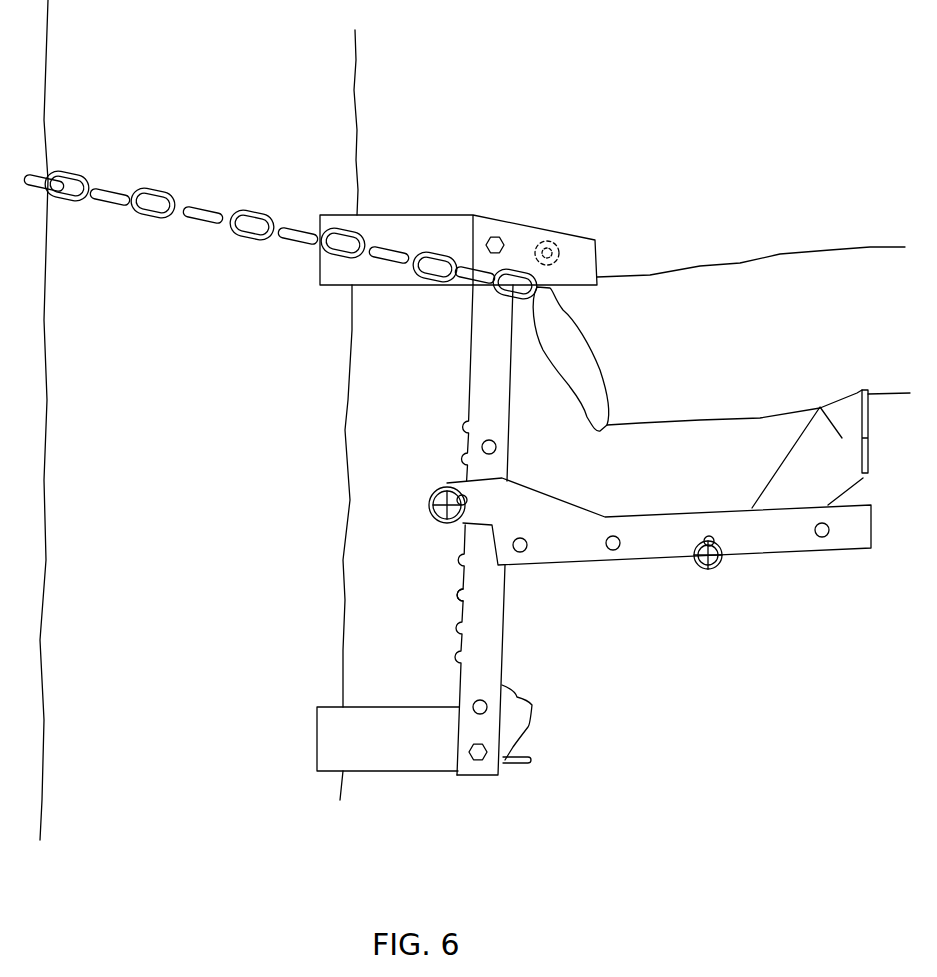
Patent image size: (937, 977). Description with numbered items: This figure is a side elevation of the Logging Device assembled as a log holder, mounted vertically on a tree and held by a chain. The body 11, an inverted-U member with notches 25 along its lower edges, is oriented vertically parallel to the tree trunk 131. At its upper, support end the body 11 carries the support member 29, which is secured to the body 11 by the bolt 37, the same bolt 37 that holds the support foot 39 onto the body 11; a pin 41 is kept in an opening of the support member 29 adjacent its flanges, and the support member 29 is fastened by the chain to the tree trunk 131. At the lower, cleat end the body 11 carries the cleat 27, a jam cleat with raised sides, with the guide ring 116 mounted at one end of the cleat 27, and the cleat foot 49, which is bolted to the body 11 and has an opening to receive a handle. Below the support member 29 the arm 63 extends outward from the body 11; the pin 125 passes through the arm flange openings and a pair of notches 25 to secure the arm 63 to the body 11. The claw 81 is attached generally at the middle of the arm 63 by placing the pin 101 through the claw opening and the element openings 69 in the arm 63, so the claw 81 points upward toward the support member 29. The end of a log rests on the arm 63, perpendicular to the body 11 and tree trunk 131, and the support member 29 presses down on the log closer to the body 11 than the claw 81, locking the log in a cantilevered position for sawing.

The tree trunk 131 is at (357, 58).
The support member 29 is at (597, 258).
The support foot 39 is at (400, 215).
The bolt 37 is at (495, 237).
The pin 41 is at (593, 240).
The body 11 is at (458, 660).
The notches 25 is at (460, 600).
The arm 63 is at (778, 550).
The element openings 69 is at (613, 552).
The pin 125 is at (440, 492).
The pin 101 is at (708, 572).
The claw 81 is at (790, 478).
The cleat 27 is at (530, 728).
The guide ring 116 is at (523, 763).
The cleat foot 49 is at (390, 773).